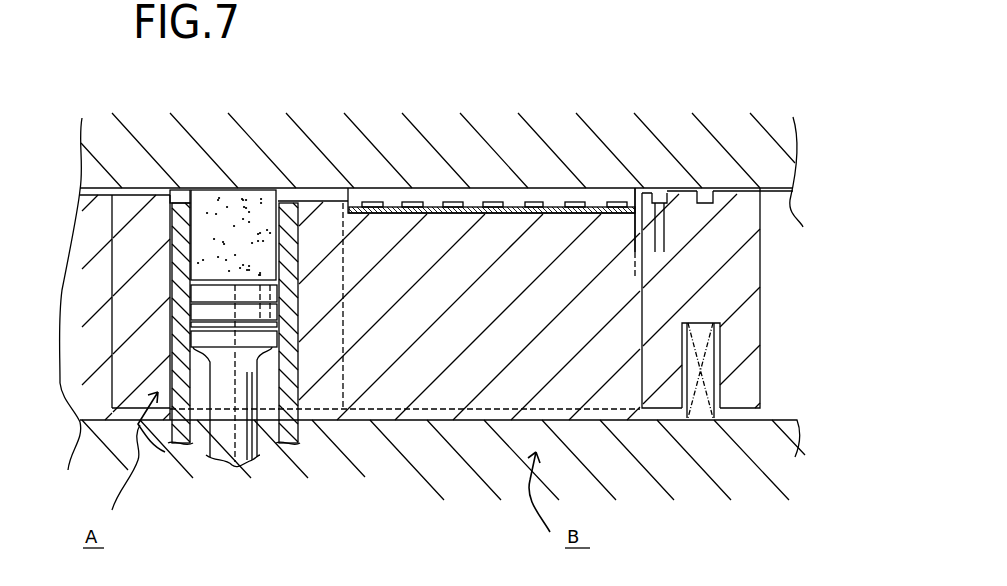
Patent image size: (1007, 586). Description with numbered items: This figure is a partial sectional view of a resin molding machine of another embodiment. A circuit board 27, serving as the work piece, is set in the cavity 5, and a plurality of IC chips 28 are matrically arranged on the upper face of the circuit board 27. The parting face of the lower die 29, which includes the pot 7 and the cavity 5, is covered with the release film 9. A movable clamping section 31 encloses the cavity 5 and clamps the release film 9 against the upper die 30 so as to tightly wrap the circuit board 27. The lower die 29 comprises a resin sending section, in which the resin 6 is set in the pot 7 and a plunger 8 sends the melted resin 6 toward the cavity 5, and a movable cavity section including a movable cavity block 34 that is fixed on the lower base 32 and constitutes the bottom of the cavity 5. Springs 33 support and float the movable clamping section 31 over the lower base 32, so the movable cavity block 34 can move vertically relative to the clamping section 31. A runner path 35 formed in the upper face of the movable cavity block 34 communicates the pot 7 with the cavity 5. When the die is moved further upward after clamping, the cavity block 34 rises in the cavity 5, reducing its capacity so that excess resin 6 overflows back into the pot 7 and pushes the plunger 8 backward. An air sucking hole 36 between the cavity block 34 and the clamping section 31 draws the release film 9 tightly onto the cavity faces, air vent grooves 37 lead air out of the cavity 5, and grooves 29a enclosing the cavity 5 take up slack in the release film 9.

The cavity 5 is at (390, 195).
The resin 6 is at (216, 210).
The pot 7 is at (148, 190).
The plunger 8 is at (248, 392).
The release film 9 is at (742, 190).
The circuit board 27 is at (473, 202).
The IC chips 28 is at (532, 207).
The lower die 29 is at (93, 302).
The grooves 29a is at (707, 198).
The upper die 30 is at (88, 163).
The movable clamping section 31 is at (737, 290).
The lower base 32 is at (770, 420).
The springs 33 is at (703, 357).
The movable cavity block 34 is at (465, 378).
The runner path 35 is at (291, 200).
The air sucking hole 36 is at (640, 258).
The air vent grooves 37 is at (645, 190).